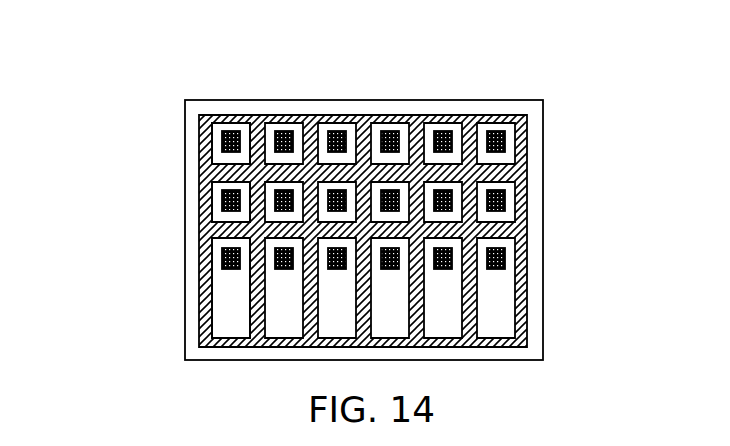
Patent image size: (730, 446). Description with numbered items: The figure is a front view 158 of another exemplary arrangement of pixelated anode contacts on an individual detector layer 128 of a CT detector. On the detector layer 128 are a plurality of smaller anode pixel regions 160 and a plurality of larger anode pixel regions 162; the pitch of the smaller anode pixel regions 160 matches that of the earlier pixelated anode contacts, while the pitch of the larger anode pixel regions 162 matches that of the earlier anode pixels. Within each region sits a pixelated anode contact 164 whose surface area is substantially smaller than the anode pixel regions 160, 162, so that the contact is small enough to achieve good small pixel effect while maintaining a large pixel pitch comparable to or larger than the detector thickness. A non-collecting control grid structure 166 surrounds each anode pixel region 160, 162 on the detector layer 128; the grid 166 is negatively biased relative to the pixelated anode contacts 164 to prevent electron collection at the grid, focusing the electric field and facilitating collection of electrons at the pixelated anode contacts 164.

The detector layer 128 is at (387, 107).
The front view 158 is at (588, 78).
The smaller anode pixel regions 160 is at (216, 198).
The larger anode pixel regions 162 is at (215, 283).
The pixelated anode contacts 164 is at (503, 257).
The non-collecting control grid structure 166 is at (527, 284).